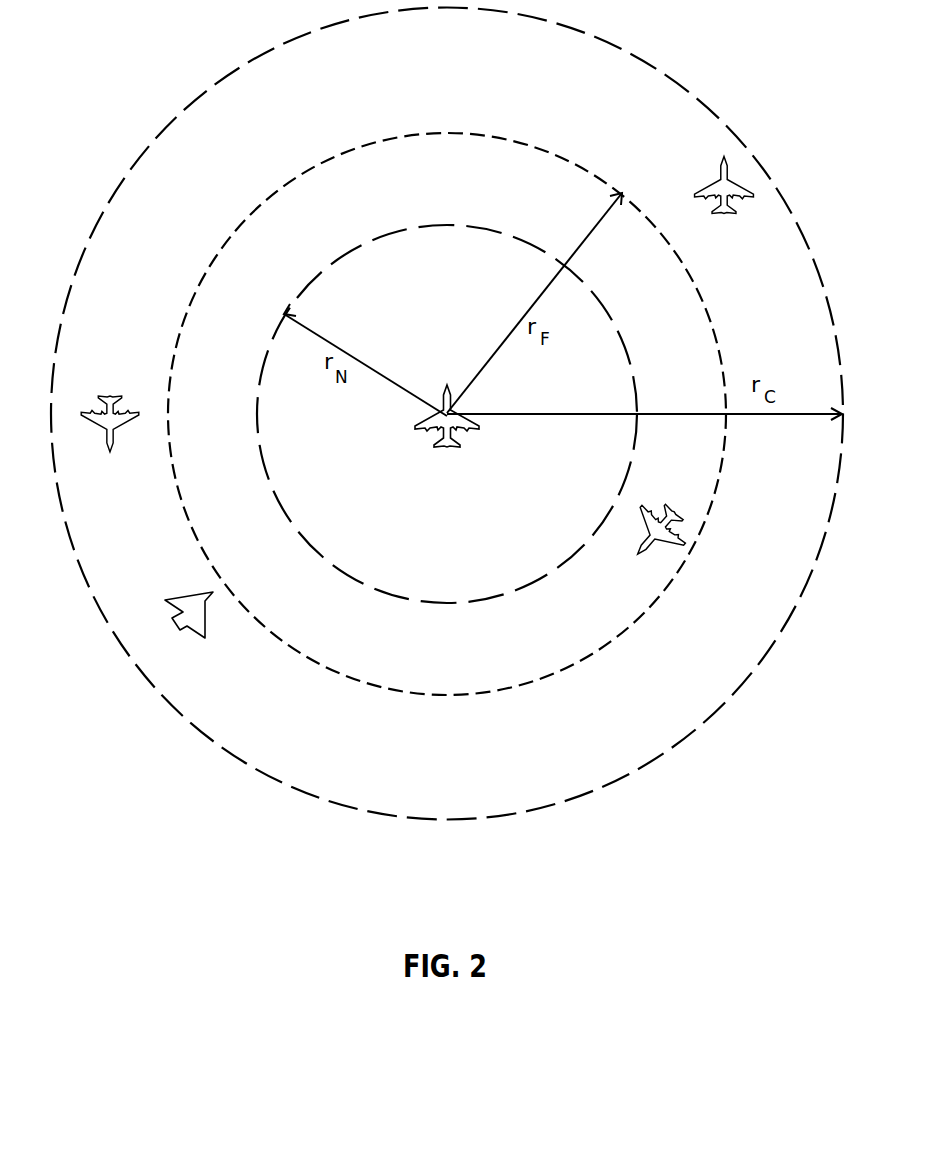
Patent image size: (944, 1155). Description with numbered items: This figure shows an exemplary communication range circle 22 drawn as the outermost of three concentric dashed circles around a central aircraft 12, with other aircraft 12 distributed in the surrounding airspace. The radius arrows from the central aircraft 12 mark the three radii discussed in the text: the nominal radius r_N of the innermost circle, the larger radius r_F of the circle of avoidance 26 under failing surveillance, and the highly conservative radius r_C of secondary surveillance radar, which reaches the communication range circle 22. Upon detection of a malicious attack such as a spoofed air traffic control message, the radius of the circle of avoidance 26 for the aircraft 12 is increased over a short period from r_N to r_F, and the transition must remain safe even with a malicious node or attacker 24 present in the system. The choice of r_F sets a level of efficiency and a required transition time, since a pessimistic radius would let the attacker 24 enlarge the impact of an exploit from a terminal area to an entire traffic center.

The aircraft 12 is at (103, 397).
The communication range circle 22 is at (682, 743).
The malicious node or attacker 24 is at (191, 597).
The circle of avoidance 26 is at (715, 337).